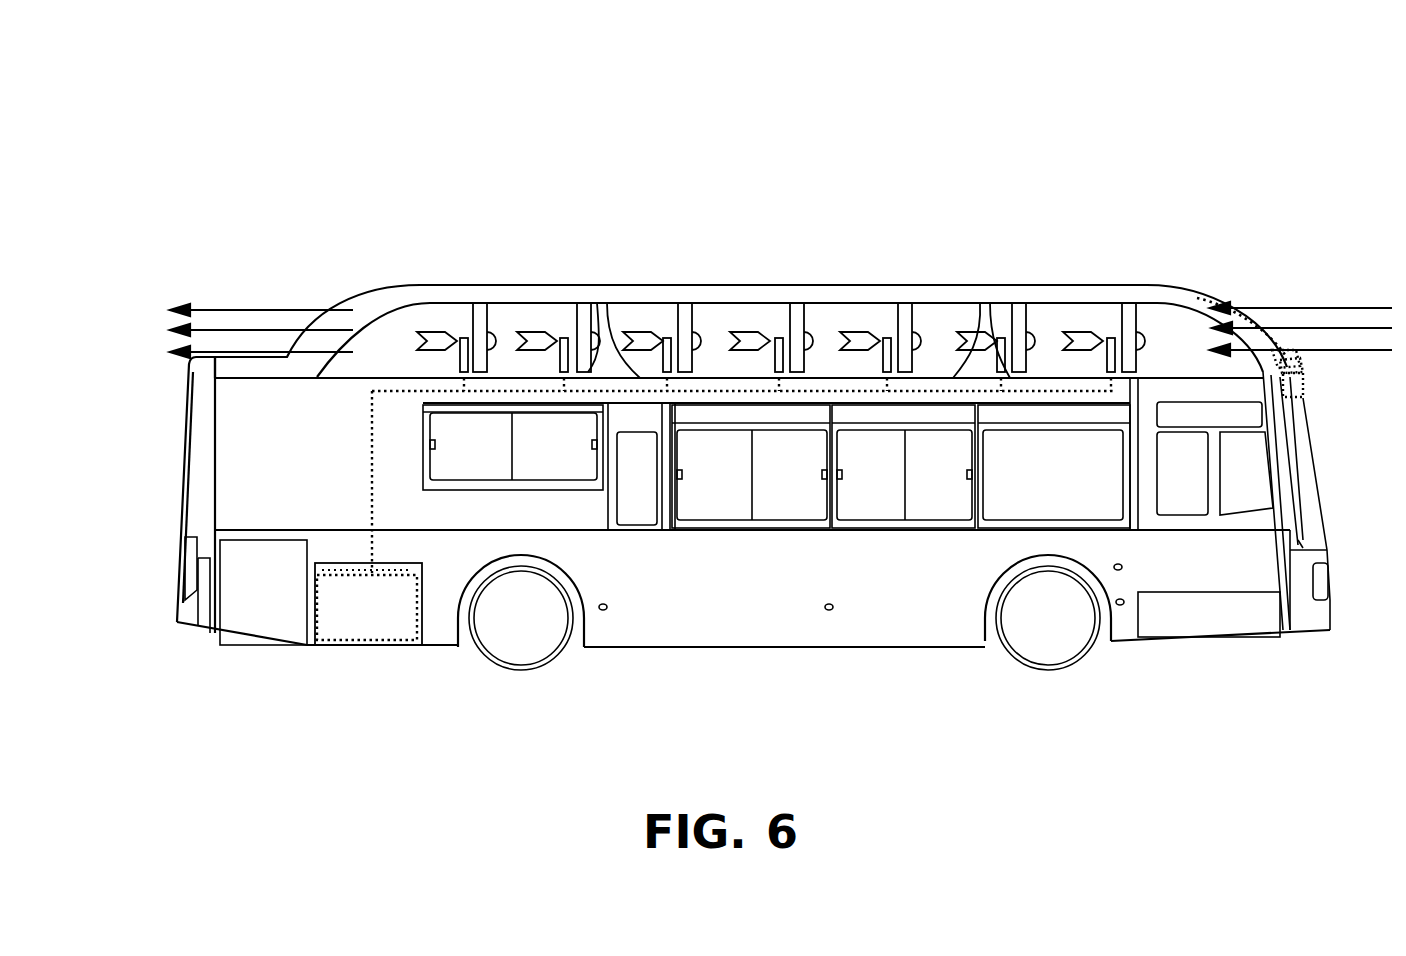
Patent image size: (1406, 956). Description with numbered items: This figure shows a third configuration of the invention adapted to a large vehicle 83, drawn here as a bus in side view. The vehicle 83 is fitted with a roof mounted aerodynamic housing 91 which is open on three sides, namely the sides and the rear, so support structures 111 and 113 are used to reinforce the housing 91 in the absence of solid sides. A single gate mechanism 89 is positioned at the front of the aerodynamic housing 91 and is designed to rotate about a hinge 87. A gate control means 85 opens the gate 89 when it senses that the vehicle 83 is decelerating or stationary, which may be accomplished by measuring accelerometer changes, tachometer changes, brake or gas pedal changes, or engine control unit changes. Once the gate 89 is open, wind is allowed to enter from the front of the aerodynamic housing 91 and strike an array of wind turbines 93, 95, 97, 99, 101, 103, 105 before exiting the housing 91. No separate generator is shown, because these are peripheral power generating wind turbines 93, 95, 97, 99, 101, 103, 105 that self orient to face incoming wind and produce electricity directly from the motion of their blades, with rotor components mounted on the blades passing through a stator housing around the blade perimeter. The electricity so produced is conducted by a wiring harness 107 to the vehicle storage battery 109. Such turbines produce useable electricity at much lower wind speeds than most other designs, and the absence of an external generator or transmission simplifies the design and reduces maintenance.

The vehicle 83 is at (1325, 523).
The gate control means 85 is at (1300, 372).
The hinge 87 is at (1289, 365).
The gate mechanism 89 is at (1243, 330).
The aerodynamic housing 91 is at (1190, 290).
The wind turbine 93 is at (1128, 333).
The wind turbine 95 is at (1020, 333).
The wind turbine 97 is at (905, 333).
The wind turbine 99 is at (796, 333).
The wind turbine 101 is at (687, 333).
The wind turbine 103 is at (583, 333).
The wind turbine 105 is at (482, 333).
The wiring harness 107 is at (378, 393).
The vehicle storage battery 109 is at (353, 612).
The support structure 111 is at (985, 303).
The support structure 113 is at (612, 335).